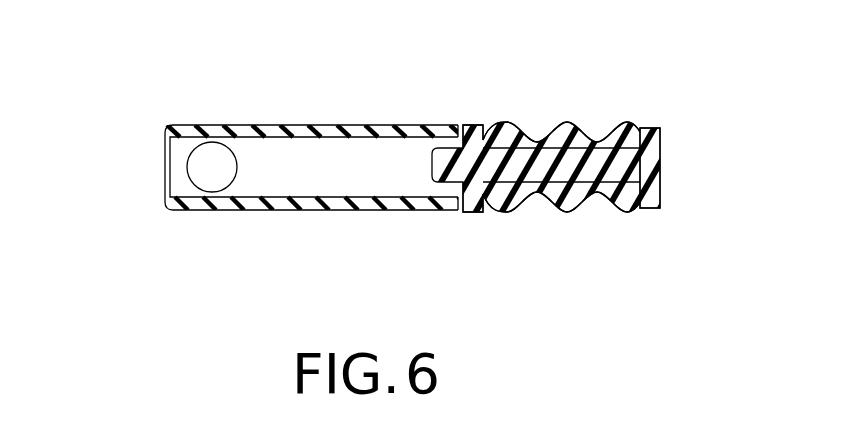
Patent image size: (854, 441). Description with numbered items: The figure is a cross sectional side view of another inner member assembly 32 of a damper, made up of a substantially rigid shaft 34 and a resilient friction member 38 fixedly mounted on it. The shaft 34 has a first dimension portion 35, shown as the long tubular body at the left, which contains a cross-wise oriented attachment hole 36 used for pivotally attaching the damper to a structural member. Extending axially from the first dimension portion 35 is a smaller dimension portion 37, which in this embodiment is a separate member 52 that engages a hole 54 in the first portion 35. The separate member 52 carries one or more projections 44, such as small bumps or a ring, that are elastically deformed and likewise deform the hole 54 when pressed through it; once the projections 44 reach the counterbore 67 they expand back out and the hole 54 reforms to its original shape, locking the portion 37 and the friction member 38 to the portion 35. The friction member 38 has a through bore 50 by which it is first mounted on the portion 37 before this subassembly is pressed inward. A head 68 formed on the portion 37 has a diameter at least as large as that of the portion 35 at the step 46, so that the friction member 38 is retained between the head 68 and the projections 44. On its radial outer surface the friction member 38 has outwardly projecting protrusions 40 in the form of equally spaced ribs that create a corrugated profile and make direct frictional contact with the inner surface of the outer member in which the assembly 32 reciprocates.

The inner member assembly 32 is at (381, 110).
The shaft 34 is at (237, 124).
The first dimension portion 35 is at (328, 176).
The attachment hole 36 is at (196, 181).
The smaller dimension portion 37 is at (558, 176).
The resilient friction member 38 is at (626, 118).
The protrusion 40 is at (497, 197).
The projection 44 is at (453, 133).
The step 46 is at (490, 128).
The through bore 50 is at (596, 144).
The separate member 52 is at (518, 198).
The hole 54 is at (472, 192).
The counterbore 67 is at (413, 196).
The head 68 is at (660, 168).